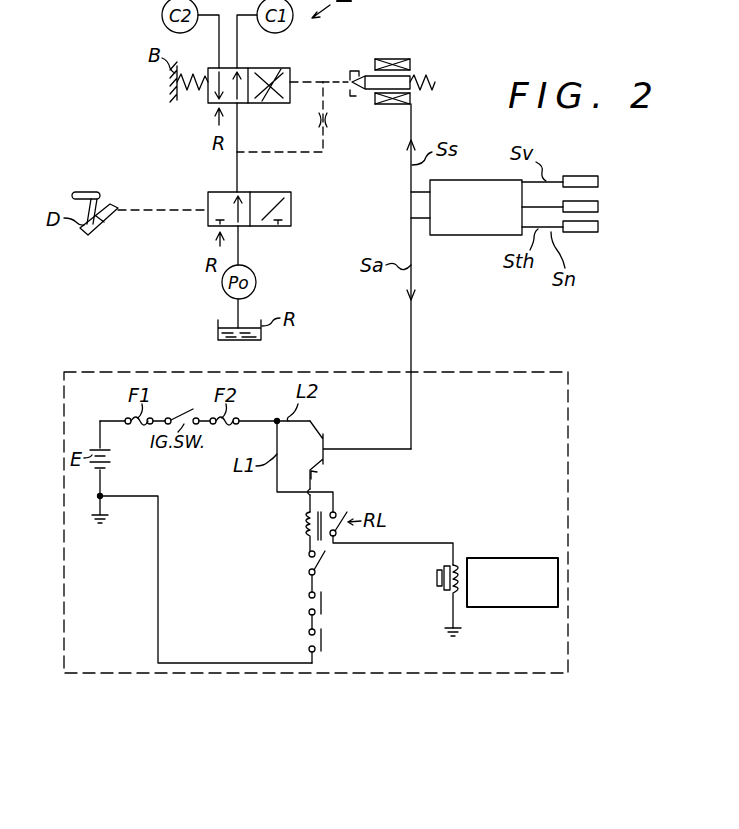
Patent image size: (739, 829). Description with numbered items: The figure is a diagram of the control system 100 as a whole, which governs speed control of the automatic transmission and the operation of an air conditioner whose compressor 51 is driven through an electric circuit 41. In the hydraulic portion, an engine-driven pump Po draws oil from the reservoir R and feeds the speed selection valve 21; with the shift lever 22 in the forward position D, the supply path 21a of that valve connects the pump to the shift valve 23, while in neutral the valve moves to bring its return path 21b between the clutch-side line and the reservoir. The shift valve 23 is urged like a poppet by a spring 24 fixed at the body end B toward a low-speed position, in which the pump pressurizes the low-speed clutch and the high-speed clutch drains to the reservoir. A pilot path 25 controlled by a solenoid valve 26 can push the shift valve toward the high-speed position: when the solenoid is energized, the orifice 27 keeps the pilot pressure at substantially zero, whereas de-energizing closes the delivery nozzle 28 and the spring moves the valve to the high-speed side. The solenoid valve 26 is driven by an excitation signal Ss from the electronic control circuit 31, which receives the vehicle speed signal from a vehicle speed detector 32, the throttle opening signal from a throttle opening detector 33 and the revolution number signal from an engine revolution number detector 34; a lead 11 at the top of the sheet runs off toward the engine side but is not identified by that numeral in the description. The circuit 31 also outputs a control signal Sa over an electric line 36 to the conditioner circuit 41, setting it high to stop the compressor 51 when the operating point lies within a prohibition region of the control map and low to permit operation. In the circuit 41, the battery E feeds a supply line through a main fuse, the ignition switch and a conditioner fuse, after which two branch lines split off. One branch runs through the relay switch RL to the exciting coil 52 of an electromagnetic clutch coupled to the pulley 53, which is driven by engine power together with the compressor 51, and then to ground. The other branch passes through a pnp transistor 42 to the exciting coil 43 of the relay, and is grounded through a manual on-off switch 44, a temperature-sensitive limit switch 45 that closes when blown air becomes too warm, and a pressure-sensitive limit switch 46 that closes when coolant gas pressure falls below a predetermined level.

The engine 11 is at (526, 0).
The speed selection valve 21 is at (258, 200).
The supply path 21a is at (218, 192).
The return path 21b is at (283, 192).
The shift lever 22 is at (82, 192).
The shift valve 23 is at (272, 103).
The spring 24 is at (190, 92).
The pilot path 25 is at (314, 80).
The solenoid valve 26 is at (437, 82).
The orifice 27 is at (330, 122).
The delivery nozzle 28 is at (353, 70).
The electronic control circuit 31 is at (478, 236).
The vehicle speed detector 32 is at (572, 174).
The throttle opening detector 33 is at (582, 196).
The engine revolution number detector 34 is at (580, 233).
The electric line 36 is at (412, 340).
The electric circuit 41 is at (520, 372).
The pnp transistor 42 is at (345, 417).
The exciting coil 43 is at (302, 532).
The manual switch 44 is at (300, 566).
The temperature-sensitive limit switch 45 is at (300, 606).
The pressure-sensitive limit switch 46 is at (300, 643).
The compressor 51 is at (512, 558).
The exciting coil 52 is at (462, 562).
The pulley 53 is at (437, 578).
The control system 100 is at (630, 358).